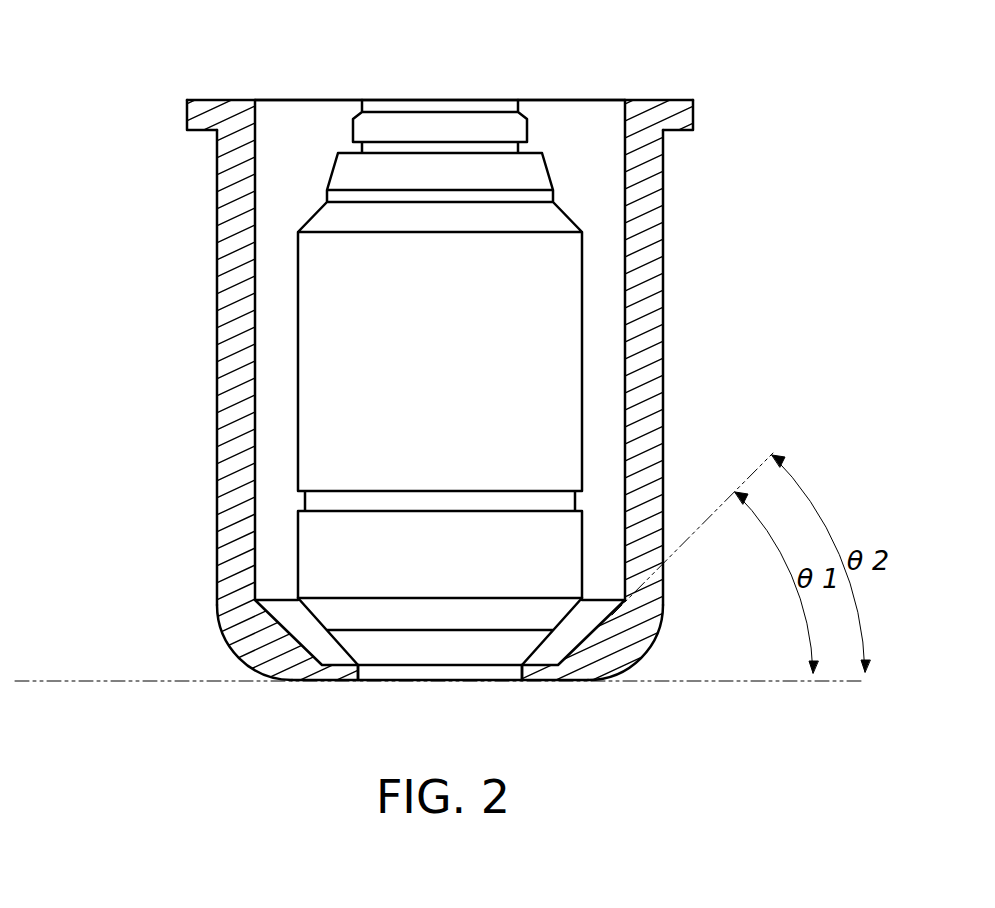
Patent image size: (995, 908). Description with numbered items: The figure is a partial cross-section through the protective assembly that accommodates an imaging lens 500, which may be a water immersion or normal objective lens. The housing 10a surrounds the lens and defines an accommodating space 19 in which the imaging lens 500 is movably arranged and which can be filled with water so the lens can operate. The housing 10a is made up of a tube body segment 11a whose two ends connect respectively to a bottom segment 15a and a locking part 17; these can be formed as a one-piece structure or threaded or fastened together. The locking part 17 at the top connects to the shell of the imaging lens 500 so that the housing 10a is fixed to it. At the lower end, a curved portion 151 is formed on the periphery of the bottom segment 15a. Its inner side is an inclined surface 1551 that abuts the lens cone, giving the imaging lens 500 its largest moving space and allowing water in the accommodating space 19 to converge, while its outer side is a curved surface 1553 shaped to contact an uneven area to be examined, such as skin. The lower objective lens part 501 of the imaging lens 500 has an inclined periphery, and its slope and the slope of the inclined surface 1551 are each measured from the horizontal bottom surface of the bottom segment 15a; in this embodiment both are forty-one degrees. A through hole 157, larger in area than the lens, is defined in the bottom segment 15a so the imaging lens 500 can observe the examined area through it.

The housing 10a is at (683, 266).
The tube body segment 11a is at (653, 333).
The locking part 17 is at (193, 120).
The accommodating space 19 is at (583, 133).
The imaging lens 500 is at (452, 107).
The objective lens part 501 is at (325, 628).
The curved portion 151 is at (653, 645).
The inclined surface 1551 is at (579, 641).
The curved surface 1553 is at (240, 656).
The bottom segment 15a is at (627, 670).
The through hole 157 is at (423, 682).